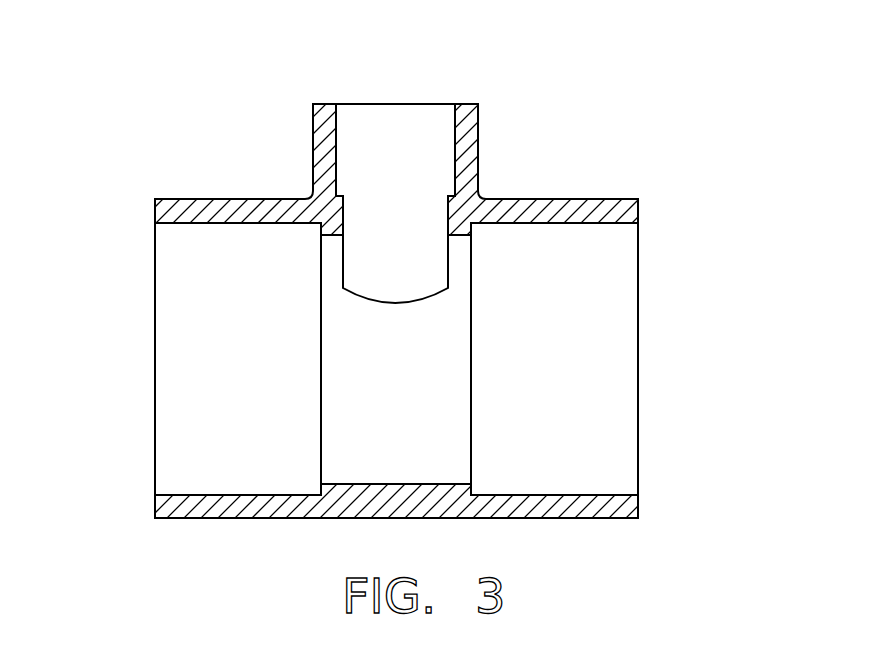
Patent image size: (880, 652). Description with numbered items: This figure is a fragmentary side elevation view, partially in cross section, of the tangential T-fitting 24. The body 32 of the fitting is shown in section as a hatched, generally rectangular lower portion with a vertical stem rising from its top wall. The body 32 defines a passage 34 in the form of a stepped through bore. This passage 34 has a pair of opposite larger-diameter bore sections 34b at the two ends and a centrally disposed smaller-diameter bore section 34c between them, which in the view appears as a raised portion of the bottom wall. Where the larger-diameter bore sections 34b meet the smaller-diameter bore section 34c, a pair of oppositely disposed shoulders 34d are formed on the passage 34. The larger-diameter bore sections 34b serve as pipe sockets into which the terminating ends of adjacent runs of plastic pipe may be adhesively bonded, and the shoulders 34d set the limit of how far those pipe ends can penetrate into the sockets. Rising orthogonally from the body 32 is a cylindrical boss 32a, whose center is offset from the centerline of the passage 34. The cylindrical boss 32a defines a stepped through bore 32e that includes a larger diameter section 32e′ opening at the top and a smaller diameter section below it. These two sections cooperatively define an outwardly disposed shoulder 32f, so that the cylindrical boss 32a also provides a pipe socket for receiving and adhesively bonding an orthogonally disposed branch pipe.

The tangential T-fitting 24 is at (540, 162).
The body 32 is at (588, 206).
The cylindrical boss 32a is at (315, 168).
The stepped through bore 32e is at (336, 123).
The larger diameter section 32e′ is at (455, 133).
The shoulder 32f is at (337, 197).
The passage 34 is at (597, 224).
The larger-diameter bore sections 34b is at (175, 493).
The smaller-diameter bore section 34c is at (357, 483).
The shoulders 34d is at (320, 483).